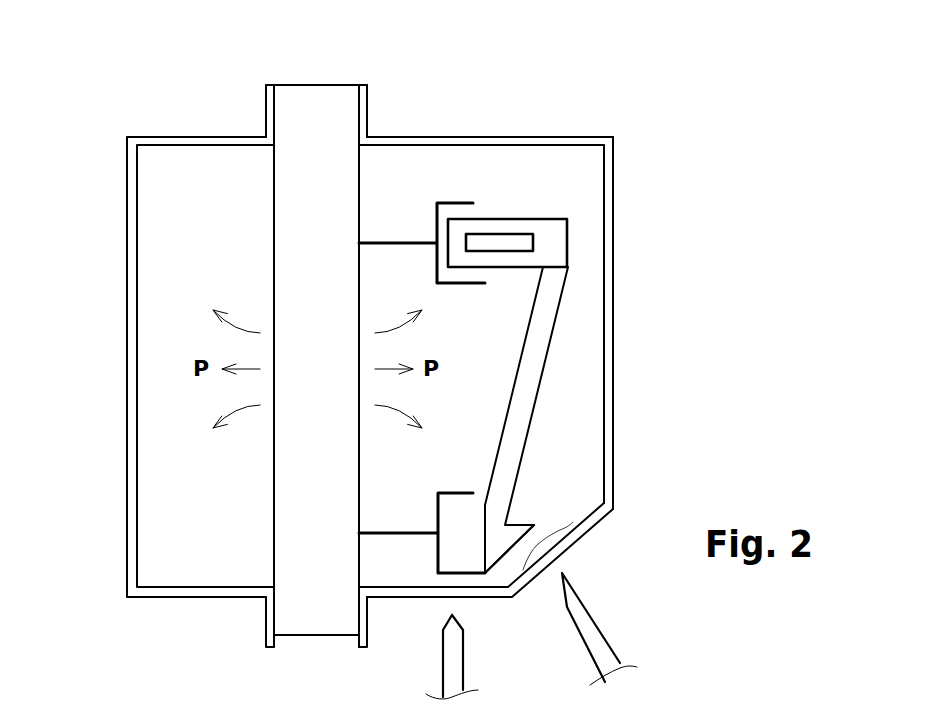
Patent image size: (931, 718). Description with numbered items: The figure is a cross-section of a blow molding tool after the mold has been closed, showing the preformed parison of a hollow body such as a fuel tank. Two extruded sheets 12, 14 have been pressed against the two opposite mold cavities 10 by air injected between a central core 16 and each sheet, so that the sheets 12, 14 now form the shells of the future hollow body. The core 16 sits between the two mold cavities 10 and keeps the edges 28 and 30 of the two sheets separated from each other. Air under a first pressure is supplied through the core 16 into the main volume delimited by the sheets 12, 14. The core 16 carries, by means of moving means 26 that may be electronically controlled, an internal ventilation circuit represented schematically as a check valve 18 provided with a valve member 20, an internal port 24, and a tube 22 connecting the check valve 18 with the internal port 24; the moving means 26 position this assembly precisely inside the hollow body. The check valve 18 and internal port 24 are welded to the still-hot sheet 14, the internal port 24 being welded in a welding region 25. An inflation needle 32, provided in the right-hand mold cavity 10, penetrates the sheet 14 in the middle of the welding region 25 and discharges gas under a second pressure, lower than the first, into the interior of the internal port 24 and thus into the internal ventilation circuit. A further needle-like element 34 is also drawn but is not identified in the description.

The mold cavities 10 is at (570, 120).
The extruded sheet 12 is at (127, 470).
The extruded sheet 14 is at (613, 315).
The core 16 is at (297, 202).
The check valve 18 is at (558, 239).
The valve member 20 is at (498, 242).
The tube 22 is at (527, 382).
The internal port 24 is at (534, 516).
The welding region 25 is at (527, 537).
The moving means 26 is at (382, 242).
The edge 28 is at (277, 110).
The edge 30 is at (357, 612).
The inflation needle 32 is at (590, 627).
The vertical needle 34 is at (452, 645).